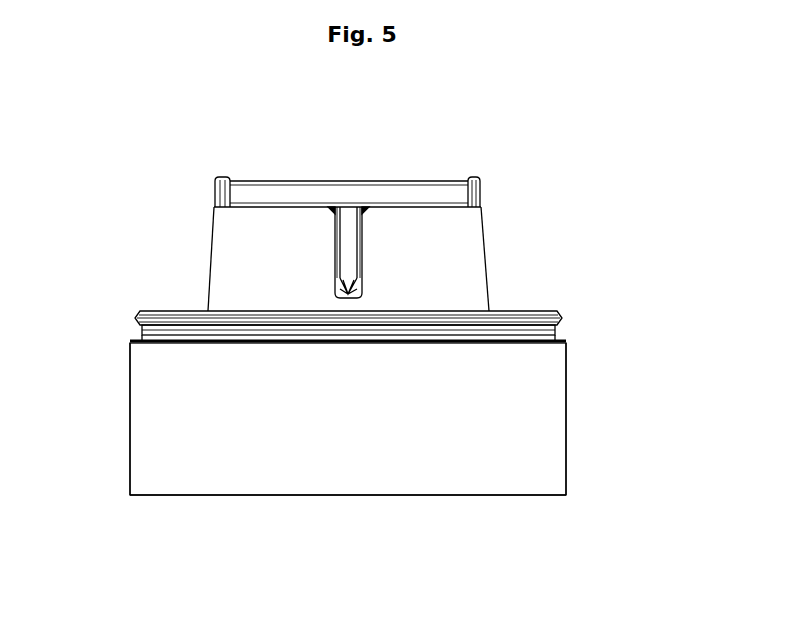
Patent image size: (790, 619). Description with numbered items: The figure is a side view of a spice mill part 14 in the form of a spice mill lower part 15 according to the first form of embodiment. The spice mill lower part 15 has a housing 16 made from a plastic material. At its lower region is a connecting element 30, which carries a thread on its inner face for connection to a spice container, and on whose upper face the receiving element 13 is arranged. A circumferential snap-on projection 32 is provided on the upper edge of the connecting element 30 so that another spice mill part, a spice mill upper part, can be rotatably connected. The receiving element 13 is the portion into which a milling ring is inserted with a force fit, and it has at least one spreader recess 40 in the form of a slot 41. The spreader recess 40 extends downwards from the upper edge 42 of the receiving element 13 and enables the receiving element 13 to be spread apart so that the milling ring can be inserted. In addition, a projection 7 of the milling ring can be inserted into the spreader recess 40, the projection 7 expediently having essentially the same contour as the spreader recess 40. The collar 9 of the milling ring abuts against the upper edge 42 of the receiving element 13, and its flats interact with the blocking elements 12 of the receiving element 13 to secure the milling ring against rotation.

The projection 7 is at (347, 255).
The collar 9 is at (418, 193).
The blocking element 12 is at (482, 195).
The receiving element 13 is at (487, 242).
The spice mill part 14 is at (562, 516).
The spice mill lower part 15 is at (572, 454).
The housing 16 is at (536, 381).
The connecting element 30 is at (132, 497).
The snap-on projection 32 is at (563, 317).
The spreader recess 40 is at (322, 260).
The slot 41 is at (336, 238).
The upper edge 42 is at (438, 206).